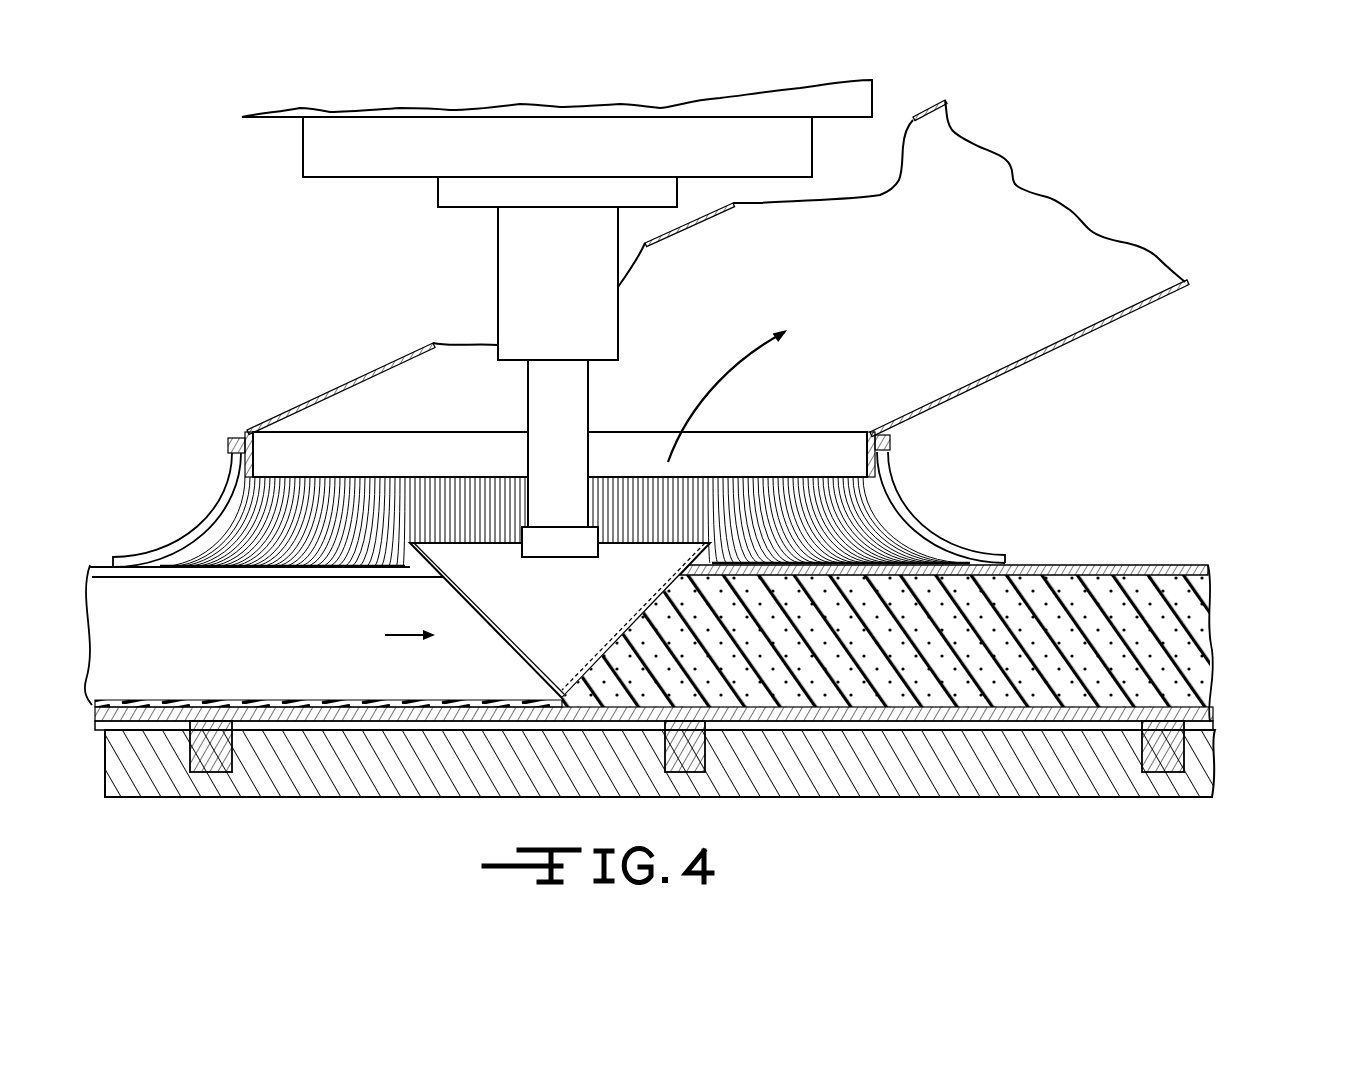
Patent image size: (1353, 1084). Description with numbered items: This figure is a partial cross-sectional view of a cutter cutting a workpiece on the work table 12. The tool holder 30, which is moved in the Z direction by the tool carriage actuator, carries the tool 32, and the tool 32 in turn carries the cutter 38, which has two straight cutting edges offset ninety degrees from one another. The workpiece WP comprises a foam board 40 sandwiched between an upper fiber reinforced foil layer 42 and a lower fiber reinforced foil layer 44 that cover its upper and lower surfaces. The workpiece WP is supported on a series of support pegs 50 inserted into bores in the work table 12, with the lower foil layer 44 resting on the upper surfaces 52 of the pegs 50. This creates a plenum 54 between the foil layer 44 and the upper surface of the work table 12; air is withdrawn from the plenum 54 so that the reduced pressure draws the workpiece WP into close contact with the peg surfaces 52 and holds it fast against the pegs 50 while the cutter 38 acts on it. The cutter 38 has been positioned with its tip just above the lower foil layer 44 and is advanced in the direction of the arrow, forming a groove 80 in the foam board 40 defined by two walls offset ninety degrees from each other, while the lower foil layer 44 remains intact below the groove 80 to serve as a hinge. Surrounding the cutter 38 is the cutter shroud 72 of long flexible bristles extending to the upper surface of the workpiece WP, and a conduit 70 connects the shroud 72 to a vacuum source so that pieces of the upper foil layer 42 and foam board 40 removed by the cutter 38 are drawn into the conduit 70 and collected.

The work table 12 is at (1002, 797).
The tool holder 30 is at (873, 95).
The tool 32 is at (327, 177).
The cutter 38 is at (463, 598).
The foam board 40 is at (1178, 560).
The upper fiber reinforced foil layer 42 is at (1078, 565).
The lower fiber reinforced foil layer 44 is at (850, 721).
The support pegs 50 is at (1162, 772).
The upper surfaces 52 is at (1163, 703).
The plenum 54 is at (374, 730).
The conduit 70 is at (1113, 317).
The cutter shroud 72 is at (940, 496).
The groove 80 is at (182, 649).
The workpiece WP is at (929, 601).